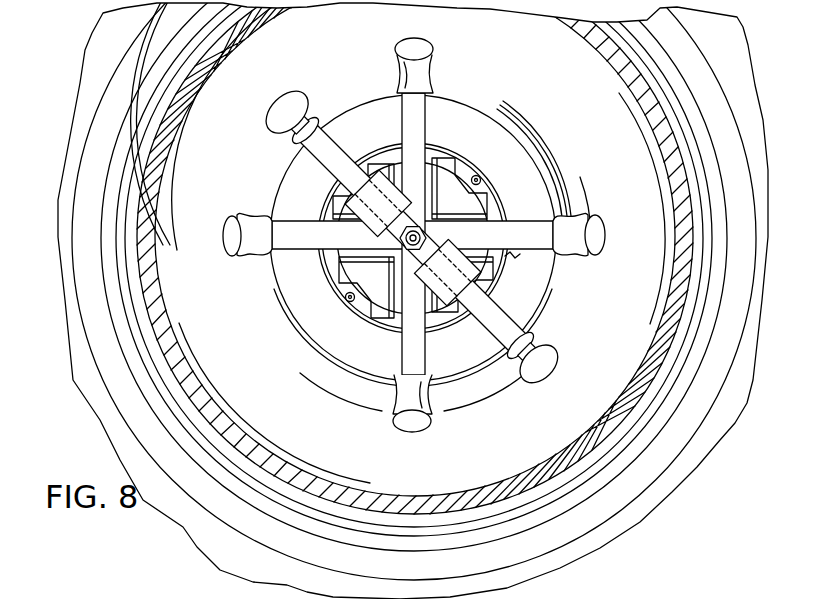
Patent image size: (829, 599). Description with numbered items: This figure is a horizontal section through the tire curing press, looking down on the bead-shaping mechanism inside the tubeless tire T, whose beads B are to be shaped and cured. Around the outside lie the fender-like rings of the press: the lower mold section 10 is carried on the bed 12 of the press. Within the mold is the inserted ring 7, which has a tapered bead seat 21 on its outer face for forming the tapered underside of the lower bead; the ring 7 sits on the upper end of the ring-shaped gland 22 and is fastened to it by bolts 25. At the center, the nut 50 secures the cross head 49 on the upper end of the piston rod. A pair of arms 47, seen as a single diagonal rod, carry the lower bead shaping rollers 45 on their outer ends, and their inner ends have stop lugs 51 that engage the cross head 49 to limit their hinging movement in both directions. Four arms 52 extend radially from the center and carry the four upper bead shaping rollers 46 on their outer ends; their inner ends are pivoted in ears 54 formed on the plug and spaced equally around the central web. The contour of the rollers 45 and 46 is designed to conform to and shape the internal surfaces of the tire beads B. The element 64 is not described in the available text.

The inserted ring 7 is at (312, 315).
The lower mold section 10 is at (117, 342).
The bed 12 is at (703, 449).
The bead seat 21 is at (288, 178).
The gland 22 is at (490, 182).
The bolts 25 is at (478, 178).
The bead shaping rollers 45 is at (303, 97).
The bead shaping rollers 46 is at (428, 60).
The arms 47 is at (338, 146).
The cross head 49 is at (464, 237).
The nut 50 is at (424, 232).
The stop lugs 51 is at (396, 203).
The arms 52 is at (418, 128).
The ears 54 is at (443, 170).
The member 64 is at (80, 598).
The beads B is at (277, 295).
The tubeless tire T is at (227, 432).